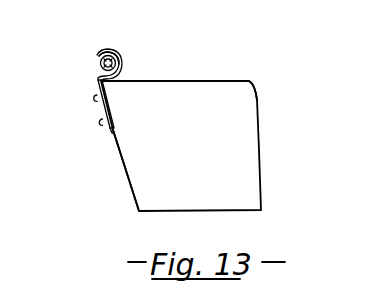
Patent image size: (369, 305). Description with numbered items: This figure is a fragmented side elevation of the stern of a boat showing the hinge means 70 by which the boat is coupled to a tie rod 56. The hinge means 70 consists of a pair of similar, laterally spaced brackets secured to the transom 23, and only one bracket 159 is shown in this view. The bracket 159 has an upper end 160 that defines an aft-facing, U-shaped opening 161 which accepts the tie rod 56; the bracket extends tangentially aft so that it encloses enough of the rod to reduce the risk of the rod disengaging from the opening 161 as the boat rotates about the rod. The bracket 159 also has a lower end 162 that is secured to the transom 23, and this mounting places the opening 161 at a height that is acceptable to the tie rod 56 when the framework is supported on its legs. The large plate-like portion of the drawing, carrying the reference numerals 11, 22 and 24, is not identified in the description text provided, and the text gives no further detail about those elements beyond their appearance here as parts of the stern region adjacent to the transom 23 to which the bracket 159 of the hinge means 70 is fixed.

The door panel 11 is at (243, 132).
The panel top edge 22 is at (168, 90).
The transom 23 is at (127, 168).
The panel corner edge 24 is at (236, 79).
The tie rod 56 is at (128, 56).
The hinge means 70 is at (210, 31).
The bracket 159 is at (103, 140).
The upper end 160 is at (99, 52).
The U-shaped opening 161 is at (88, 62).
The lower end 162 is at (96, 101).